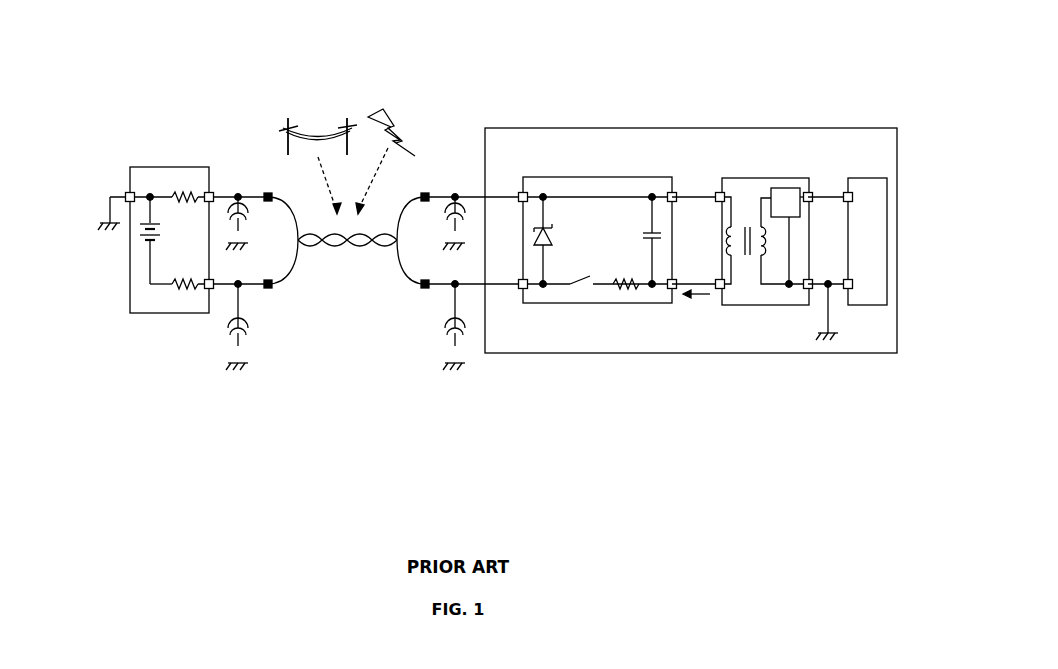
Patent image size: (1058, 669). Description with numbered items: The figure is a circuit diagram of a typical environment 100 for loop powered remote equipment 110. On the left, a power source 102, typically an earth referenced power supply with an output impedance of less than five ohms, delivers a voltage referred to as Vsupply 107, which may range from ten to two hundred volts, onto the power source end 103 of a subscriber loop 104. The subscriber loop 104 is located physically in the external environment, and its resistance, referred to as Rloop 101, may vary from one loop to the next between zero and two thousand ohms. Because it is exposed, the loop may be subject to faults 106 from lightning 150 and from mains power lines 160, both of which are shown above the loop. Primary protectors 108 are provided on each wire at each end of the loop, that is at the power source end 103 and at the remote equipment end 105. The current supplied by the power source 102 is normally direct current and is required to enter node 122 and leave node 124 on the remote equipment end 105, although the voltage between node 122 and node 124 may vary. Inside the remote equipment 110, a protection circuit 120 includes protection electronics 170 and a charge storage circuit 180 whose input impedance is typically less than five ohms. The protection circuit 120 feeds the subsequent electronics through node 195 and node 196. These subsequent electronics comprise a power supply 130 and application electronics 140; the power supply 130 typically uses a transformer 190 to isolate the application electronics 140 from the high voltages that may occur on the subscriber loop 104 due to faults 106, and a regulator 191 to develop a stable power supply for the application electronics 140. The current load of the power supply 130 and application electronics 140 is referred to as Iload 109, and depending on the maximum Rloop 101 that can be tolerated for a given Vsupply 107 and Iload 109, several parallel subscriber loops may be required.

The environment 100 is at (162, 231).
The Rloop 101 is at (348, 312).
The power source 102 is at (188, 345).
The power source end 103 is at (180, 385).
The subscriber loop 104 is at (365, 250).
The remote equipment end 105 is at (813, 430).
The faults 106 is at (370, 160).
The Vsupply 107 is at (177, 250).
The primary protectors 108 is at (254, 221).
The Iload 109 is at (695, 325).
The remote equipment 110 is at (750, 355).
The protection circuit 120 is at (573, 176).
The node 122 is at (521, 203).
The node 124 is at (521, 292).
The power supply 130 is at (731, 176).
The application electronics 140 is at (847, 247).
The lightning 150 is at (425, 113).
The mains power lines 160 is at (327, 113).
The protection electronics 170 is at (560, 263).
The charge storage circuit 180 is at (634, 248).
The transformer 190 is at (753, 220).
The regulator 191 is at (783, 205).
The node 195 is at (680, 193).
The node 196 is at (668, 300).